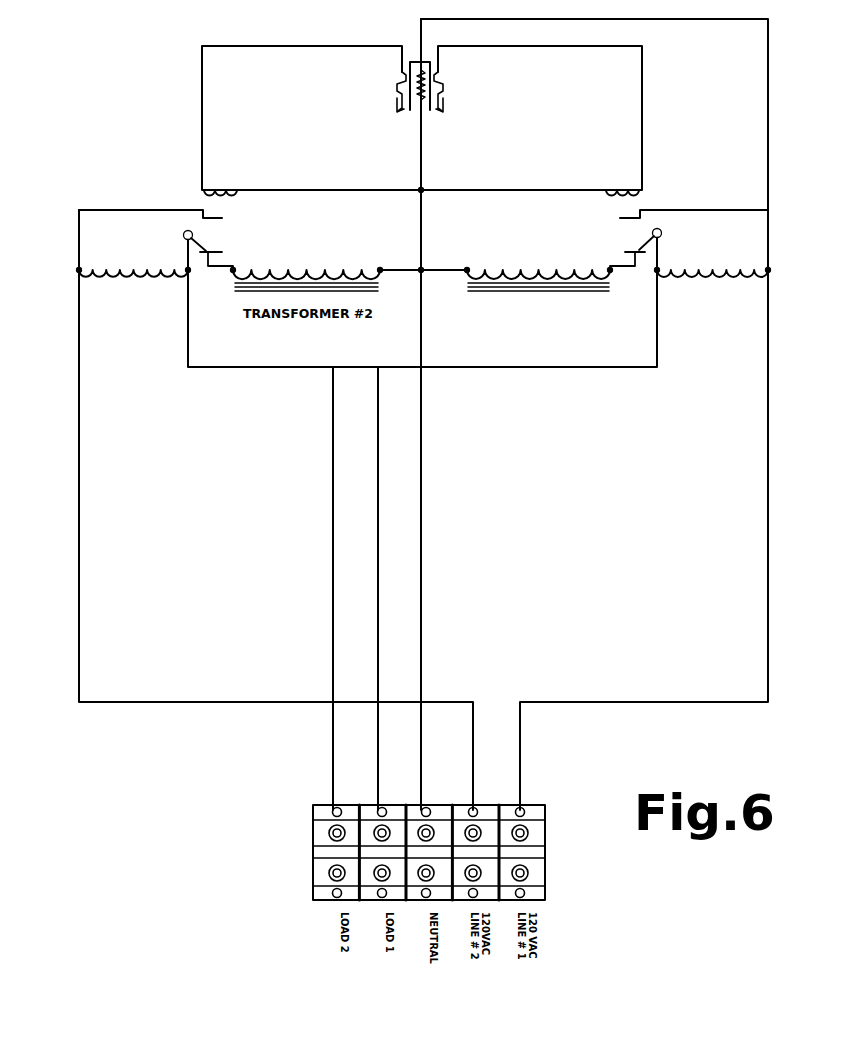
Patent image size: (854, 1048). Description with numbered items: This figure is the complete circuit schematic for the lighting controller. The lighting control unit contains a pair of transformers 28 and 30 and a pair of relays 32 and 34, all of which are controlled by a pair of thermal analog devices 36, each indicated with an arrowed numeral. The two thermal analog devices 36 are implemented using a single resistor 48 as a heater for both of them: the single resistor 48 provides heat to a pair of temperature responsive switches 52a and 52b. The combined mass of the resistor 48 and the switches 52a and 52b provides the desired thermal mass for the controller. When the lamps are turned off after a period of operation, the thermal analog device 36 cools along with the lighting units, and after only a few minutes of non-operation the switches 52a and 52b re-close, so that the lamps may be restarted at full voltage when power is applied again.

The transformer 28 is at (120, 335).
The transformer 30 is at (636, 310).
The relay 32 is at (590, 229).
The relay 34 is at (260, 238).
The thermal analog device 36 is at (405, 112).
The resistor 48 is at (418, 79).
The temperature responsive switch 52a is at (366, 110).
The temperature responsive switch 52b is at (474, 100).